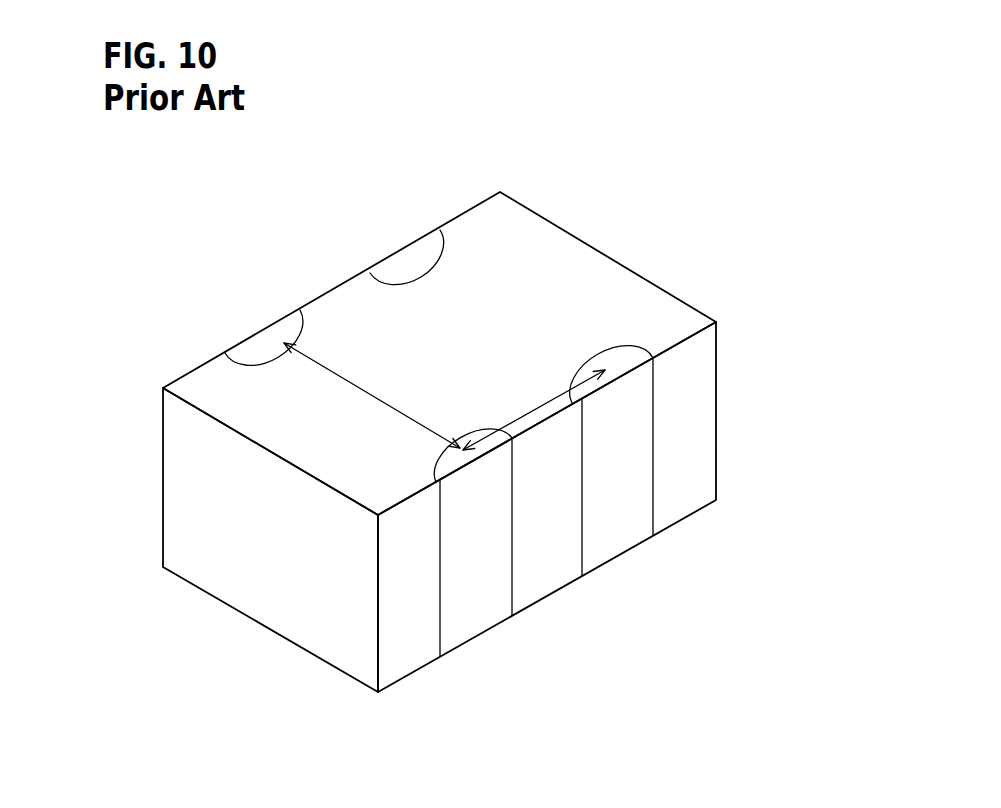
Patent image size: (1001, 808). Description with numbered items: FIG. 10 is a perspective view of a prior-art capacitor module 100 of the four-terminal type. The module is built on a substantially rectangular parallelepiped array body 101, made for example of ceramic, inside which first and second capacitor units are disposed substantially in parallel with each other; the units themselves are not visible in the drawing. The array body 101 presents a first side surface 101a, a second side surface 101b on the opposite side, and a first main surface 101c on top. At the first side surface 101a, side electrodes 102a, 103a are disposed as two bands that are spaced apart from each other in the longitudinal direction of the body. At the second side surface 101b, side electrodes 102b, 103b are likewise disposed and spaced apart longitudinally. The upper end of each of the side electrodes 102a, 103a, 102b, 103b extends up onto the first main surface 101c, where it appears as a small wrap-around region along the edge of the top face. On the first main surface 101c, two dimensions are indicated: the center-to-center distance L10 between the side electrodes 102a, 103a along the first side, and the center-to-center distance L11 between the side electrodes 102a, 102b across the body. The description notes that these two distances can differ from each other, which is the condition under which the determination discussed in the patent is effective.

The capacitor module 100 is at (427, 392).
The array body 101 is at (427, 424).
The first side surface 101a is at (690, 442).
The second side surface 101b is at (161, 477).
The first main surface 101c is at (621, 318).
The side electrode 102a is at (478, 600).
The side electrode 102b is at (237, 346).
The side electrode 103a is at (617, 515).
The side electrode 103b is at (387, 258).
The center-to-center distance L10 is at (553, 400).
The center-to-center distance L11 is at (371, 396).